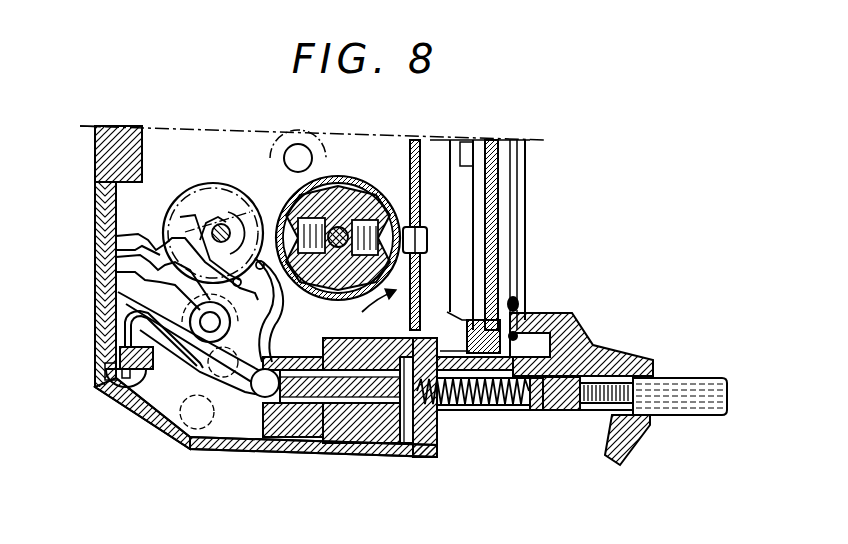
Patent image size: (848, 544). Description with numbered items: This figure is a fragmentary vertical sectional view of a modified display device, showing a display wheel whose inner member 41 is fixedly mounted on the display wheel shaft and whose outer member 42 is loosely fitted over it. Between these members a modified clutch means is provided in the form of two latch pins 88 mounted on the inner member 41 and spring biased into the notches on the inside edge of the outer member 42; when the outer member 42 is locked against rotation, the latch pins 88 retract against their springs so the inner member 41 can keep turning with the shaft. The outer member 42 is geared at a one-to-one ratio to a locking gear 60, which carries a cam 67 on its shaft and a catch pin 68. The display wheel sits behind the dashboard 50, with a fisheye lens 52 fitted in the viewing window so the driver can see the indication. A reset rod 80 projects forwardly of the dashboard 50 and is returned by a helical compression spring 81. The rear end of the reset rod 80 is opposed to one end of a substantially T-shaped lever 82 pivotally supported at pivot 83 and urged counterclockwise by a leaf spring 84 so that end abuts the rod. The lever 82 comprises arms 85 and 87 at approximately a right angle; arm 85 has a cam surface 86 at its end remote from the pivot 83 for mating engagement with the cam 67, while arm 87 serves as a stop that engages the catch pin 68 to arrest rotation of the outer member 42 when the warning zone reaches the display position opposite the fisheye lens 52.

The locking gear 60 is at (195, 205).
The cam 67 is at (232, 220).
The catch pin 68 is at (260, 261).
The inner member 41 is at (340, 200).
The outer member 42 is at (380, 163).
The latch pins 88 is at (413, 140).
The fisheye lens 52 is at (430, 233).
The dashboard 50 is at (492, 270).
The cam surface 86 is at (130, 236).
The arm 85 is at (130, 277).
The leaf spring 84 is at (173, 338).
The pivot 83 is at (182, 370).
The T-shaped lever 82 is at (200, 405).
The arm 87 is at (256, 365).
The helical compression spring 81 is at (518, 400).
The reset rod 80 is at (568, 400).